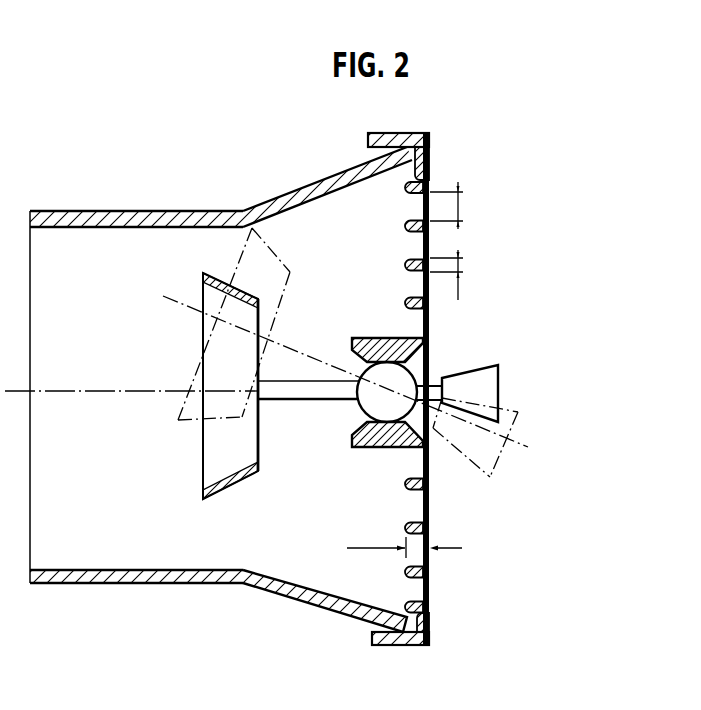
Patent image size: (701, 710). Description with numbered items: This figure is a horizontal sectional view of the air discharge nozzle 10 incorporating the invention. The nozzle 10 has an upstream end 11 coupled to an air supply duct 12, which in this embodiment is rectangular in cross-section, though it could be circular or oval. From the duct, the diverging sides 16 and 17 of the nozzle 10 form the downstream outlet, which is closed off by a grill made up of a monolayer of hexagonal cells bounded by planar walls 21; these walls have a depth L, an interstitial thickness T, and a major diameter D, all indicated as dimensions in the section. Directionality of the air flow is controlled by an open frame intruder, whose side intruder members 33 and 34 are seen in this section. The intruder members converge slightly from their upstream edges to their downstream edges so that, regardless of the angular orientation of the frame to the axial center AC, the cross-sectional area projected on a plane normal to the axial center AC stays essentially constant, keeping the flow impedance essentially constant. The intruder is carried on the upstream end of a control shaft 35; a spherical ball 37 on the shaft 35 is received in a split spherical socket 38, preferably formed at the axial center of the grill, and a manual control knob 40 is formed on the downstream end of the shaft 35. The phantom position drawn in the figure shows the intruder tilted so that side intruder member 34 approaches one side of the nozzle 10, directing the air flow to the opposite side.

The nozzle 10 is at (229, 380).
The upstream end 11 is at (233, 580).
The air supply duct 12 is at (117, 216).
The side 16 is at (327, 600).
The side 17 is at (317, 183).
The planar walls 21 is at (404, 226).
The side intruder member 33 is at (242, 487).
The side intruder member 34 is at (342, 378).
The control shaft 35 is at (290, 400).
The spherical ball 37 is at (373, 410).
The split spherical socket 38 is at (354, 350).
The manual control knob 40 is at (483, 372).
The axial center AC is at (75, 390).
The major diameter D is at (452, 205).
The interstitial thickness T is at (451, 277).
The depth L is at (404, 538).